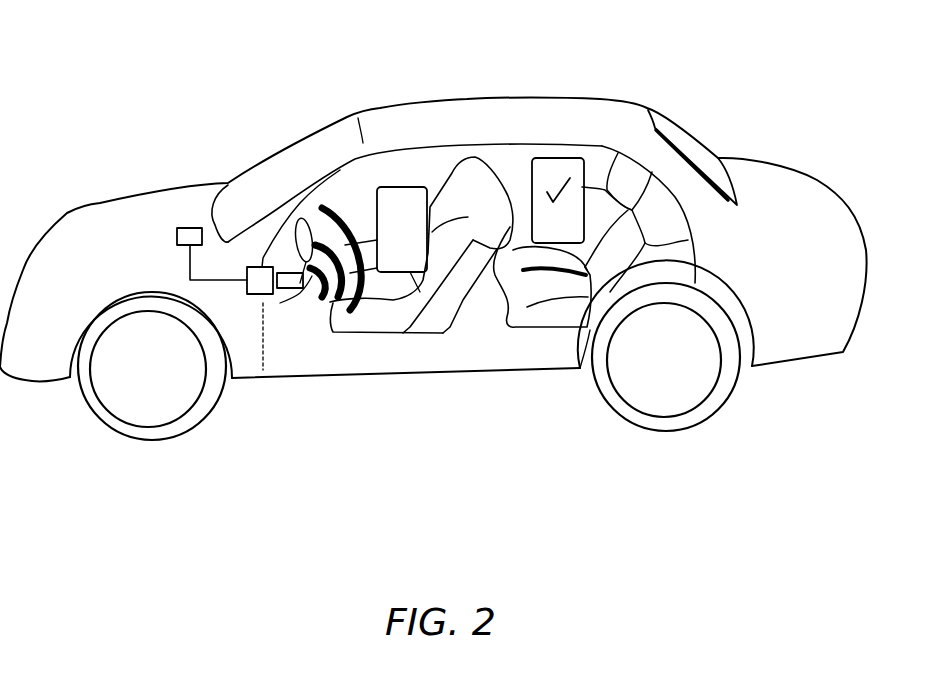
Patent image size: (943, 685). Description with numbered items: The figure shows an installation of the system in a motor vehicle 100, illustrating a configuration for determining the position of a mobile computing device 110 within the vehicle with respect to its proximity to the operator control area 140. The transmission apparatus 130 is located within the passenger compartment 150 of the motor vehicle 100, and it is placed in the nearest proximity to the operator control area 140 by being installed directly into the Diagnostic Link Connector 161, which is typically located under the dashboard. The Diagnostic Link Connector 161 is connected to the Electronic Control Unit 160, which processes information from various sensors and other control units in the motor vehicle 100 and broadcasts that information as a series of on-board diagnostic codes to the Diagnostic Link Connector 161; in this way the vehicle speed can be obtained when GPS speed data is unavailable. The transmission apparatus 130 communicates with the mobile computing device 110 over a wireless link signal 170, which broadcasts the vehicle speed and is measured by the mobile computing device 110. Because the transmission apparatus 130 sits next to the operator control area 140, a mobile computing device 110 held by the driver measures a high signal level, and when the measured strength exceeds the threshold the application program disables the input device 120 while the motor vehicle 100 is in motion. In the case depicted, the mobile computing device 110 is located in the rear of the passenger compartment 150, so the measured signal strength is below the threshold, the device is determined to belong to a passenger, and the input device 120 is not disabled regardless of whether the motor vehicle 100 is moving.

The motor vehicle 100 is at (148, 192).
The mobile computing device 110 is at (397, 195).
The input device 120 is at (558, 165).
The transmission apparatus 130 is at (292, 290).
The operator control area 140 is at (417, 300).
The passenger compartment 150 is at (448, 155).
The Electronic Control Unit 160 is at (190, 228).
The Diagnostic Link Connector 161 is at (258, 295).
The wireless link signal 170 is at (324, 206).